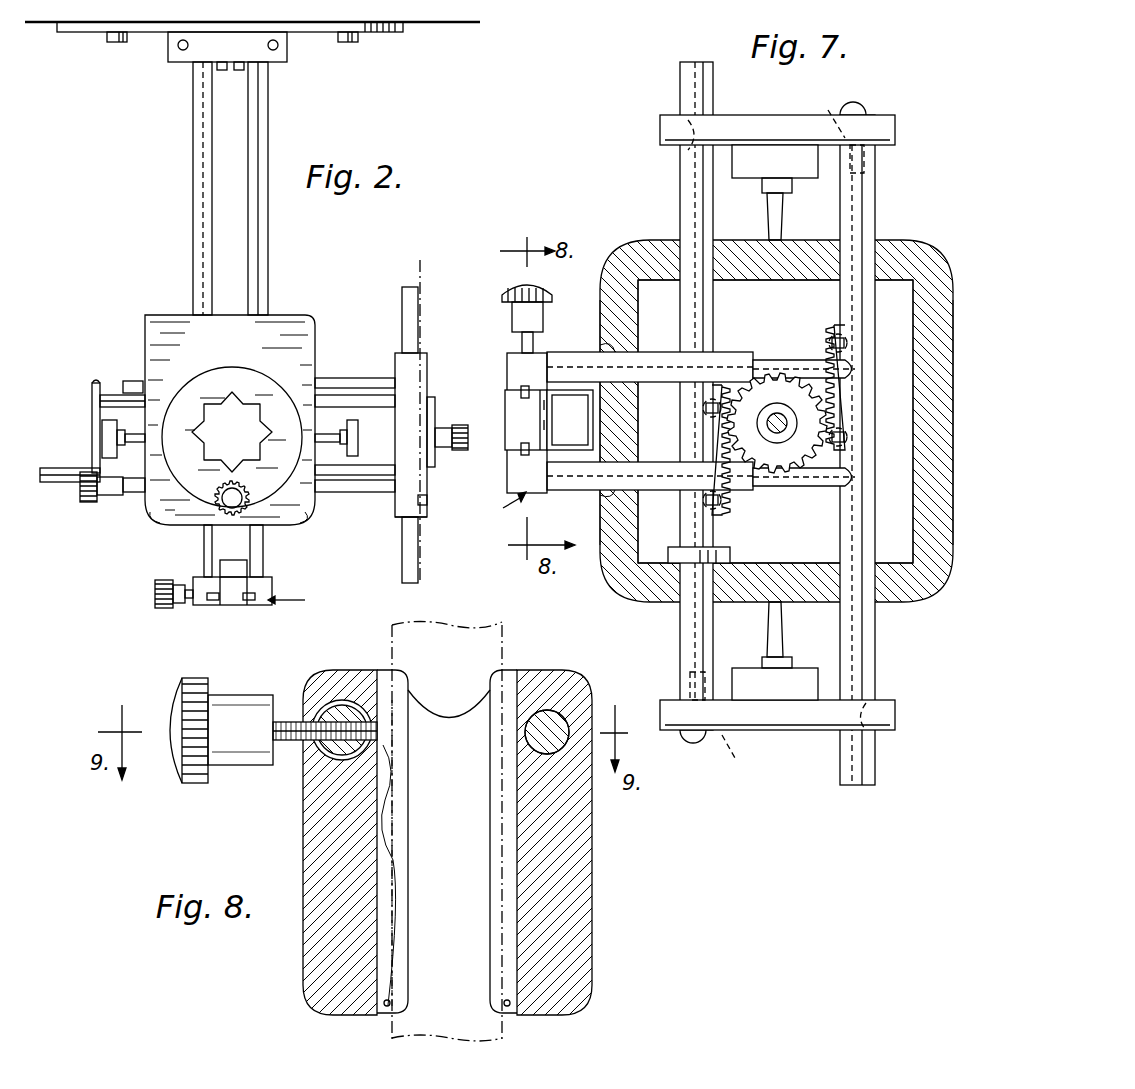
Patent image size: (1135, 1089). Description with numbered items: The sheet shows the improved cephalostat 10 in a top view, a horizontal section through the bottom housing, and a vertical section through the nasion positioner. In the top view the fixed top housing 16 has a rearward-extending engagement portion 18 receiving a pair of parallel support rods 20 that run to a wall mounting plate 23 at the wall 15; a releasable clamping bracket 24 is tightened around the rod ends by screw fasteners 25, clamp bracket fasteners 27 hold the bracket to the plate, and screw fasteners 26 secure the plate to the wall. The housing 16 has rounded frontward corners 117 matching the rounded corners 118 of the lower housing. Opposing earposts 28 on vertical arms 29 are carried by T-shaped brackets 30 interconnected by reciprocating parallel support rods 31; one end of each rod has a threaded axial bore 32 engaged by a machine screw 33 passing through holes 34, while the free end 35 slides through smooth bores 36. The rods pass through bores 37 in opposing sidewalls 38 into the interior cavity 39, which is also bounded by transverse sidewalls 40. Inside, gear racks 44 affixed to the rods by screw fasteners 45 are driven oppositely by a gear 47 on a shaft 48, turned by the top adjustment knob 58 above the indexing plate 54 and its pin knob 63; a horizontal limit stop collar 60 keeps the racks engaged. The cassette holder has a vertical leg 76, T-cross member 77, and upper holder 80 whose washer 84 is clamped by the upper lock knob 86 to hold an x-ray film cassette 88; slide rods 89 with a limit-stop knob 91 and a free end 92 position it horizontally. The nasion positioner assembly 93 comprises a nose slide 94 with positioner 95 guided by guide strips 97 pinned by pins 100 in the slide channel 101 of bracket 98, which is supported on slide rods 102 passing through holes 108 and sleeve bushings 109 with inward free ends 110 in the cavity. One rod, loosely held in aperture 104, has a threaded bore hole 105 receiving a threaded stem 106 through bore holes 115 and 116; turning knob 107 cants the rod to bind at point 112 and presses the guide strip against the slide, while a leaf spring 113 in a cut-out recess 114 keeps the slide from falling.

In FIG. 2, the cephalostat 10 is at (256, 331).
In FIG. 2, the wall 15 is at (440, 24).
In FIG. 2, the top housing 16 is at (262, 442).
In FIG. 2, the rearward-extending engagement portion 18 is at (275, 325).
In FIG. 2, the support rods 20 is at (255, 158).
In FIG. 2, the wall mounting plate 23 is at (392, 33).
In FIG. 2, the releasable clamping bracket 24 is at (255, 50).
In FIG. 2, the screw fasteners 25 is at (178, 47).
In FIG. 2, the screw fasteners 26 is at (115, 44).
In FIG. 2, the clamp bracket fasteners 27 is at (240, 72).
In FIG. 2, the earposts 28 is at (135, 434).
In FIG. 7, the earposts 28 is at (783, 210).
In FIG. 2, the vertical arms 29 is at (102, 437).
In FIG. 7, the vertical arms 29 is at (790, 174).
In FIG. 2, the T-shaped brackets 30 is at (92, 410).
In FIG. 7, the T-shaped brackets 30 is at (755, 122).
In FIG. 2, the reciprocating parallel support rods 31 is at (112, 395).
In FIG. 7, the reciprocating parallel support rods 31 is at (682, 178).
In FIG. 7, the threaded axial bore 32 is at (866, 158).
In FIG. 2, the machine screw 33 is at (93, 382).
In FIG. 7, the machine screw 33 is at (860, 105).
In FIG. 7, the holes 34 is at (783, 418).
In FIG. 2, the free end 35 is at (58, 484).
In FIG. 7, the free end 35 is at (685, 70).
In FIG. 7, the smooth bores 36 is at (682, 105).
In FIG. 7, the bores 37 is at (725, 255).
In FIG. 7, the opposing sidewalls 38 is at (785, 270).
In FIG. 7, the interior cavity 39 is at (645, 535).
In FIG. 7, the transverse sidewalls 40 is at (630, 325).
In FIG. 7, the gear racks 44 is at (725, 432).
In FIG. 7, the screw fasteners 45 is at (838, 318).
In FIG. 7, the gear 47 is at (780, 390).
In FIG. 7, the shaft 48 is at (773, 434).
In FIG. 2, the indexing plate 54 is at (214, 378).
In FIG. 2, the top adjustment knob 58 is at (220, 447).
In FIG. 7, the horizontal limit stop collar 60 is at (728, 550).
In FIG. 2, the upper knob 63 is at (246, 496).
In FIG. 2, the vertical leg 76 is at (434, 412).
In FIG. 2, the T-cross member 77 is at (430, 500).
In FIG. 2, the upper inverted U-shaped holder 80 is at (422, 522).
In FIG. 2, the washer 84 is at (446, 448).
In FIG. 2, the upper lock knob 86 is at (462, 428).
In FIG. 2, the x-ray film cassette 88 is at (422, 290).
In FIG. 2, the slide rods 89 is at (375, 378).
In FIG. 2, the limit-stop knob 91 is at (88, 504).
In FIG. 2, the free end 92 is at (133, 381).
In FIG. 2, the nasion positioner assembly 93 is at (299, 600).
In FIG. 7, the nasion positioner assembly 93 is at (508, 515).
In FIG. 2, the nose slide 94 is at (232, 606).
In FIG. 7, the nose slide 94 is at (520, 455).
In FIG. 8, the nose slide 94 is at (505, 627).
In FIG. 2, the positioner 95 is at (234, 562).
In FIG. 7, the positioner 95 is at (582, 430).
In FIG. 8, the guide strips 97 is at (410, 698).
In FIG. 2, the bracket 98 is at (205, 606).
In FIG. 7, the bracket 98 is at (522, 358).
In FIG. 8, the bracket 98 is at (297, 836).
In FIG. 8, the pins 100 is at (504, 1001).
In FIG. 8, the slide channel 101 is at (432, 923).
In FIG. 2, the slide rods 102 is at (204, 552).
In FIG. 7, the slide rods 102 is at (755, 355).
In FIG. 8, the slide rods 102 is at (305, 765).
In FIG. 8, the aperture 104 is at (378, 760).
In FIG. 8, the threaded transverse bore hole 105 is at (340, 705).
In FIG. 8, the threaded stem 106 is at (282, 715).
In FIG. 2, the knob 107 is at (156, 598).
In FIG. 7, the knob 107 is at (548, 298).
In FIG. 8, the knob 107 is at (195, 770).
In FIG. 7, the holes 108 is at (615, 340).
In FIG. 7, the sleeve bushings 109 is at (652, 360).
In FIG. 7, the inward free ends 110 is at (855, 367).
In FIG. 2, the binding point 112 is at (262, 540).
In FIG. 8, the leaf spring 113 is at (395, 845).
In FIG. 8, the cut-out recess 114 is at (396, 805).
In FIG. 8, the bore hole 115 is at (325, 705).
In FIG. 8, the bore hole 116 is at (377, 722).
In FIG. 2, the rounded frontward corners 117 is at (150, 515).
In FIG. 7, the rounded corners 118 is at (615, 245).